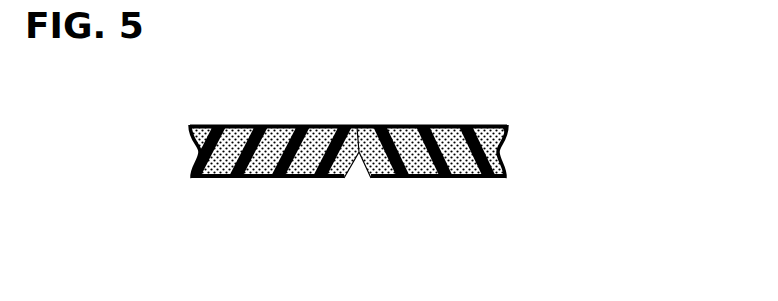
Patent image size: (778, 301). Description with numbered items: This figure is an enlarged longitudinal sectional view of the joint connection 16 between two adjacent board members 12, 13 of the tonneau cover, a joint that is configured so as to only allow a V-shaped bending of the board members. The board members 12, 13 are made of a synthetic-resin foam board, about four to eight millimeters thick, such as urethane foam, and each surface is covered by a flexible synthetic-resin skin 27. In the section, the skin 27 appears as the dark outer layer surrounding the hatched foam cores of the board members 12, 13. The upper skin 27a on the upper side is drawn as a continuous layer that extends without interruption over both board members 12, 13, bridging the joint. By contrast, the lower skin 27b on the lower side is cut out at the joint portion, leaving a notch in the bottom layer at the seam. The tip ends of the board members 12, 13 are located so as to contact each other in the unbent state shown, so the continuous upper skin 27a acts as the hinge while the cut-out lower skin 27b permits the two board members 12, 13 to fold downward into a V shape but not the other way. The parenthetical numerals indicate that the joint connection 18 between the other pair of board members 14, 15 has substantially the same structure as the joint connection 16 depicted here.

The board member 12 is at (275, 189).
The board member 14 is at (238, 178).
The board member 13 is at (443, 189).
The board member 15 is at (445, 178).
The joint connection 16 is at (333, 117).
The joint connection 18 is at (359, 152).
The flexible synthetic-resin skin 27 is at (348, 153).
The upper skin 27a is at (437, 125).
The lower skin 27b is at (318, 178).